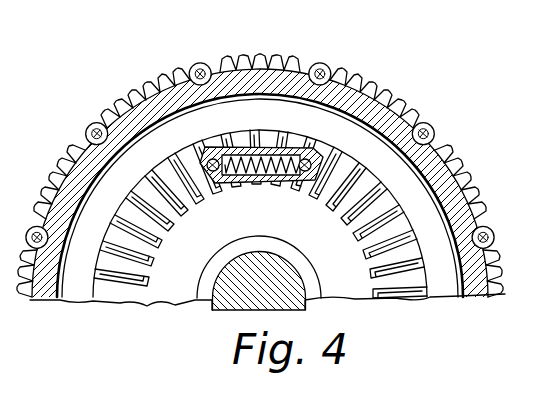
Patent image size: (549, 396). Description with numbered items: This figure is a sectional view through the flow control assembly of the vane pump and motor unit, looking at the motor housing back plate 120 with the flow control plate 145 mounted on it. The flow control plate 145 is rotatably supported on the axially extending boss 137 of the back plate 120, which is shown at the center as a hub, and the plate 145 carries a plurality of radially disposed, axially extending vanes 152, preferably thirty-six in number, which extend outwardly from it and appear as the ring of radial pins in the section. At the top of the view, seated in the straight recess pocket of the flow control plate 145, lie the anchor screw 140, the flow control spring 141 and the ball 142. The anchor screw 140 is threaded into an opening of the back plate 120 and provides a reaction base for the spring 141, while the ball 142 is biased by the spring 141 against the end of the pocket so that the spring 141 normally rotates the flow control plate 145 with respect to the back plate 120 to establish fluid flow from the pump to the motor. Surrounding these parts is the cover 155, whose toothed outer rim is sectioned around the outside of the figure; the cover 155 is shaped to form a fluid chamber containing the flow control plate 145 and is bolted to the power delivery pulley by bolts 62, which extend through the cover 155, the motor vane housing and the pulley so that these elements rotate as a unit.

The bolts 62 is at (322, 63).
The cover 155 is at (372, 108).
The motor housing back plate 120 is at (393, 164).
The ball 142 is at (214, 150).
The flow control plate 145 is at (228, 189).
The flow control spring 141 is at (262, 184).
The anchor screw 140 is at (304, 184).
The vanes 152 is at (377, 217).
The boss 137 is at (220, 304).